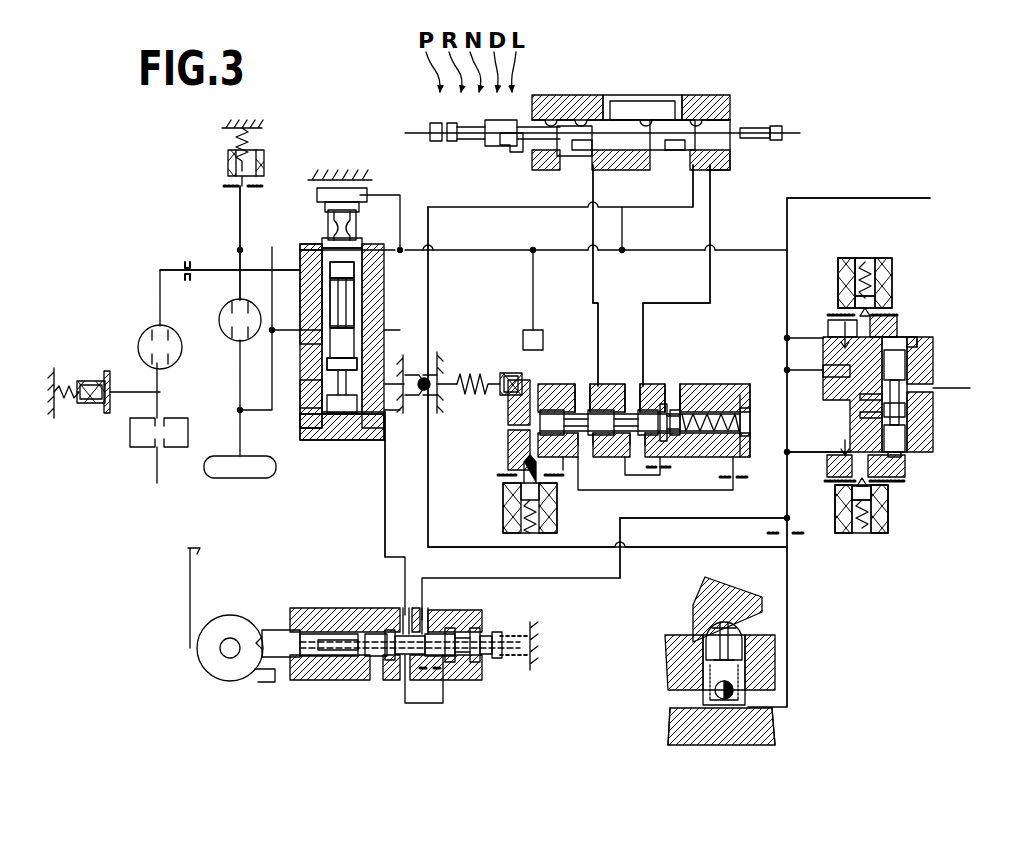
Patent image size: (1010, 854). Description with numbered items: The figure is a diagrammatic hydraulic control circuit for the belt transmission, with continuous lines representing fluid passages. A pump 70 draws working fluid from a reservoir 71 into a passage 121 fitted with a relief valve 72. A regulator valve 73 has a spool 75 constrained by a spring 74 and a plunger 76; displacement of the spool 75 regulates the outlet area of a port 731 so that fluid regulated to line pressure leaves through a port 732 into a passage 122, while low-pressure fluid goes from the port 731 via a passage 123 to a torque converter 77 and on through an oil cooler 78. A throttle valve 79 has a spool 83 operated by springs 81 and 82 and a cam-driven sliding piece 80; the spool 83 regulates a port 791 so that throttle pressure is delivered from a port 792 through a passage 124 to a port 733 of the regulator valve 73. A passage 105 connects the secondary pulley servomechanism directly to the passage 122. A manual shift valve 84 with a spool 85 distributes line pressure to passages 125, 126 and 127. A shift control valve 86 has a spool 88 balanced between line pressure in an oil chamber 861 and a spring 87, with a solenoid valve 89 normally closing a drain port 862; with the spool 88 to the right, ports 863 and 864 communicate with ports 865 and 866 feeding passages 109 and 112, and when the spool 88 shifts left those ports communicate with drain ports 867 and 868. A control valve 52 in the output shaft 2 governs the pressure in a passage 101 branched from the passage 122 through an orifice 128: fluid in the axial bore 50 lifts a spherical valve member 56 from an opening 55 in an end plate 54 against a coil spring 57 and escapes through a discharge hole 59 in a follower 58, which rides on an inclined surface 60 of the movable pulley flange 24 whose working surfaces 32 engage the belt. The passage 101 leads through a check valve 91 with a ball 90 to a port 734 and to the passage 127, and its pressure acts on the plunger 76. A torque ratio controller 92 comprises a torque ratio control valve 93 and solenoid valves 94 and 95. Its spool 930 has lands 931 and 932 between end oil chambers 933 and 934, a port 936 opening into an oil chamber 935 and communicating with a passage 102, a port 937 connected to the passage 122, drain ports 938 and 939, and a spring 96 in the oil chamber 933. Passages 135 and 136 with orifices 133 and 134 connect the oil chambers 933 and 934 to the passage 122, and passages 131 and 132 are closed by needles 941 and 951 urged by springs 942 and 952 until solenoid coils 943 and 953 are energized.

The output shaft 2 is at (682, 640).
The movable pulley flange 24 is at (726, 596).
The frustoconical working surfaces 32 is at (704, 577).
The axial bore 50 is at (772, 726).
The control valve 52 is at (760, 686).
The end plate 54 is at (702, 703).
The opening 55 is at (689, 728).
The spherical valve member 56 is at (751, 728).
The coil spring 57 is at (702, 665).
The follower 58 is at (750, 639).
The discharge hole 59 is at (750, 616).
The inclined surface 60 is at (760, 605).
The pump 70 is at (240, 320).
The reservoir 71 is at (250, 478).
The relief valve 72 is at (260, 168).
The regulator valve 73 is at (342, 178).
The spring 74 is at (366, 303).
The spool 75 is at (366, 265).
The plunger 76 is at (310, 406).
The torque converter 77 is at (160, 347).
The oil cooler 78 is at (132, 435).
The throttle valve 79 is at (351, 591).
The throttle opening responsive sliding piece 80 is at (278, 632).
The spring 81 is at (335, 662).
The spring 82 is at (512, 668).
The spool 83 is at (378, 666).
The manual shift valve 84 is at (657, 90).
The spool 85 is at (514, 158).
The shift control valve 86 is at (712, 384).
The spring 87 is at (739, 394).
The spool 88 is at (530, 426).
The solenoid valve 89 is at (503, 509).
The ball 90 is at (429, 396).
The check valve 91 is at (436, 354).
The torque ratio controller 92 is at (945, 242).
The torque ratio control valve 93 is at (942, 310).
The solenoid valve 94 is at (889, 538).
The solenoid valve 95 is at (887, 258).
The spring 96 is at (897, 448).
The passage 101 is at (471, 547).
The passage 102 is at (949, 388).
The passage 105 is at (904, 196).
The passage 109 is at (580, 385).
The passage 112 is at (634, 322).
The passage 121 is at (254, 244).
The passage 122 is at (502, 250).
The passage 123 is at (238, 270).
The passage 124 is at (385, 487).
The passage 125 is at (588, 170).
The passage 126 is at (710, 198).
The passage 127 is at (692, 168).
The orifice 128 is at (798, 539).
The passage 131 is at (836, 476).
The passage 132 is at (834, 320).
The orifice 133 is at (840, 449).
The orifice 134 is at (840, 332).
The passage 135 is at (906, 474).
The passage 136 is at (907, 336).
The port 731 is at (299, 294).
The port 732 is at (358, 246).
The port 733 is at (346, 426).
The port 734 is at (356, 366).
The port 791 is at (430, 620).
The port 792 is at (401, 612).
The oil chamber 861 is at (530, 418).
The drain port 862 is at (520, 477).
The port 863 is at (620, 390).
The port 864 is at (680, 362).
The port 865 is at (581, 390).
The port 866 is at (652, 390).
The port 867 is at (564, 470).
The port 868 is at (612, 458).
The spool 930 is at (904, 322).
The land 931 is at (905, 358).
The land 932 is at (901, 424).
The oil chamber 933 is at (906, 460).
The oil chamber 934 is at (914, 340).
The oil chamber 935 is at (866, 398).
The port 936 is at (907, 402).
The port 937 is at (858, 370).
The drain port 938 is at (864, 416).
The drain port 939 is at (850, 422).
The needle 941 is at (855, 497).
The spring 942 is at (866, 536).
The solenoid coil 943 is at (886, 516).
The needle 951 is at (856, 296).
The spring 952 is at (865, 258).
The solenoid coil 953 is at (844, 258).